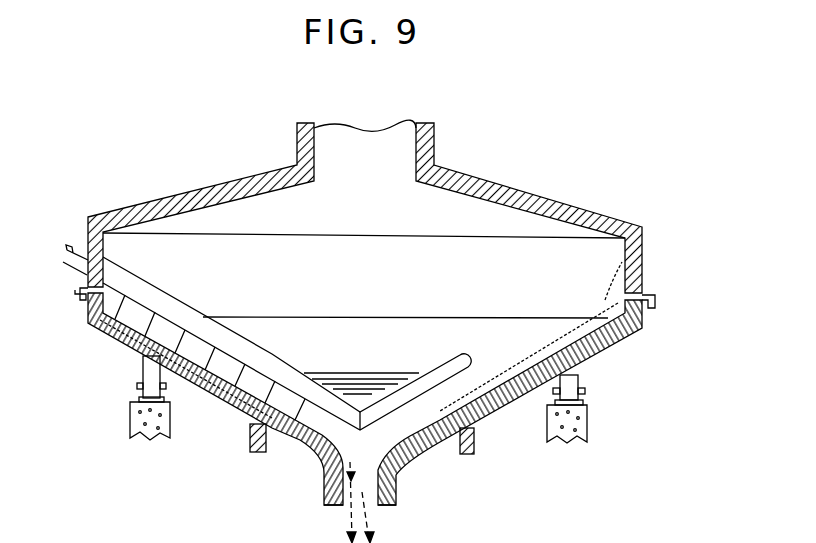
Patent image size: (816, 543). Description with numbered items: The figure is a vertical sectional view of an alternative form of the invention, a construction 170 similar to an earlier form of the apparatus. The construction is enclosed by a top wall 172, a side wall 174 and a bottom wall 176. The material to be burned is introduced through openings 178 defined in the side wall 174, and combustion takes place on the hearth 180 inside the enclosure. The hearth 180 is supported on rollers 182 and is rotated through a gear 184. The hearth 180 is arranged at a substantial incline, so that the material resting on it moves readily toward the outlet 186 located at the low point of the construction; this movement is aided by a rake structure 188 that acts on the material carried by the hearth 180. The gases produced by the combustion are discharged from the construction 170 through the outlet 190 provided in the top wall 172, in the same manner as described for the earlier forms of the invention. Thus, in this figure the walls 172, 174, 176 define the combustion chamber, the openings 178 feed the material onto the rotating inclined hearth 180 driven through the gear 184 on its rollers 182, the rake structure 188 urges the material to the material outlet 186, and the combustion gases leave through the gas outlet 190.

The construction 170 is at (247, 106).
The top wall 172 is at (198, 185).
The side wall 174 is at (88, 236).
The bottom wall 176 is at (503, 408).
The openings 178 is at (642, 262).
The hearth 180 is at (557, 350).
The rollers 182 is at (140, 391).
The gear 184 is at (250, 432).
The outlet 186 is at (376, 475).
The rake structure 188 is at (237, 352).
The outlet 190 is at (366, 163).